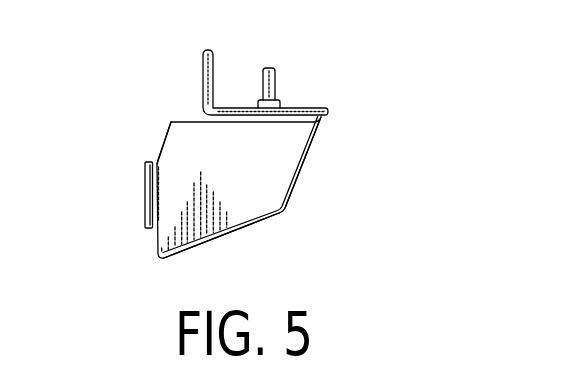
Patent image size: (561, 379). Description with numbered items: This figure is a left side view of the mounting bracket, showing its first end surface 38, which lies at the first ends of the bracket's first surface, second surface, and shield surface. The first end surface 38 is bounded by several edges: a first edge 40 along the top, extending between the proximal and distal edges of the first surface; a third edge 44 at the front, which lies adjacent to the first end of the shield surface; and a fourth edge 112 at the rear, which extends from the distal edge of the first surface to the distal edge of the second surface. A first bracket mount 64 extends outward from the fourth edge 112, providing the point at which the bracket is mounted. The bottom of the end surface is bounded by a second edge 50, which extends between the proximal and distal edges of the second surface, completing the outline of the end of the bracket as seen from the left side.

The first end surface 38 is at (258, 176).
The first edge 40 is at (312, 68).
The third edge 44 is at (306, 172).
The second edge 50 is at (244, 233).
The first bracket mount 64 is at (143, 203).
The fourth edge 112 is at (160, 142).